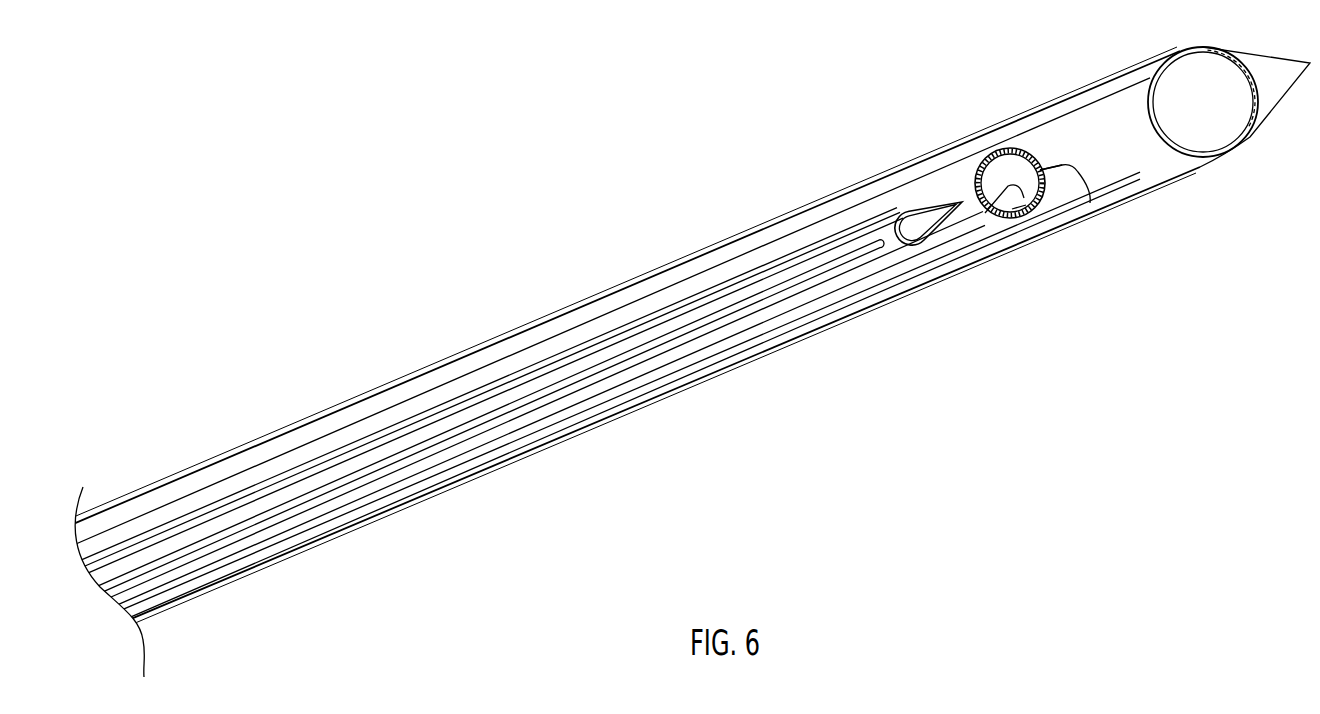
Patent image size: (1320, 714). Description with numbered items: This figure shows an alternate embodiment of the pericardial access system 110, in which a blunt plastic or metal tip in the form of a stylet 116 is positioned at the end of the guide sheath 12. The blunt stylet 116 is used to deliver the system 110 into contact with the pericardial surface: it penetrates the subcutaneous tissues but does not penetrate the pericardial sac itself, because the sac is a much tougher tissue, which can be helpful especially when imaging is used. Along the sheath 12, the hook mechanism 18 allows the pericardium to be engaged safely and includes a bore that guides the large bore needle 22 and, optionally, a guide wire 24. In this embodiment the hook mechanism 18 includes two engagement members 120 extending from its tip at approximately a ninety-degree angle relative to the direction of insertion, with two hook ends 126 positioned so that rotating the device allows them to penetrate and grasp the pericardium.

The guide sheath 12 is at (1140, 198).
The hook mechanism 18 is at (940, 185).
The large bore needle 22 is at (908, 238).
The guide wire 24 is at (680, 330).
The system 110 is at (773, 443).
The stylet 116 is at (1225, 129).
The engagement members 120 is at (1090, 203).
The hook ends 126 is at (1046, 168).